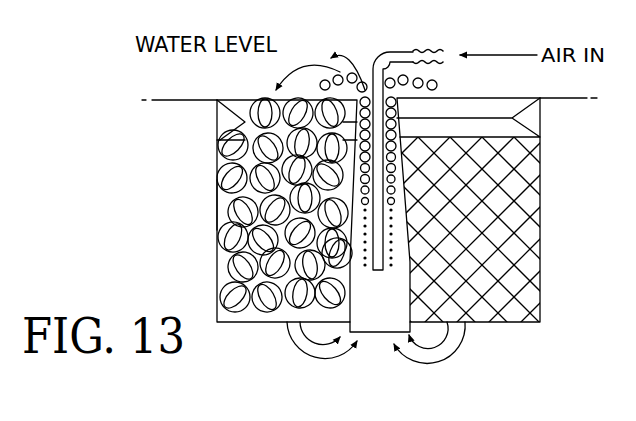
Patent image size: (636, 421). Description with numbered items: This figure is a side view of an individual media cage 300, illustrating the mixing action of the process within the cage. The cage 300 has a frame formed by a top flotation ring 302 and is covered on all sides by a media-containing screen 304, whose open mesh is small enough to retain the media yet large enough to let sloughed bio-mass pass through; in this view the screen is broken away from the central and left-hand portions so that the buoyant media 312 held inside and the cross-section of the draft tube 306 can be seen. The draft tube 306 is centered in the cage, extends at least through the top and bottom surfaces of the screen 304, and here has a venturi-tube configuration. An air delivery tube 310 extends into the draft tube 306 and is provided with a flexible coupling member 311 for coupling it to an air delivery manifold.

The media cage 300 is at (204, 139).
The top flotation ring 302 is at (226, 120).
The media-containing screen 304 is at (217, 218).
The draft tube 306 is at (398, 313).
The air delivery tube 310 is at (392, 48).
The flexible coupling member 311 is at (427, 48).
The buoyant media 312 is at (207, 203).